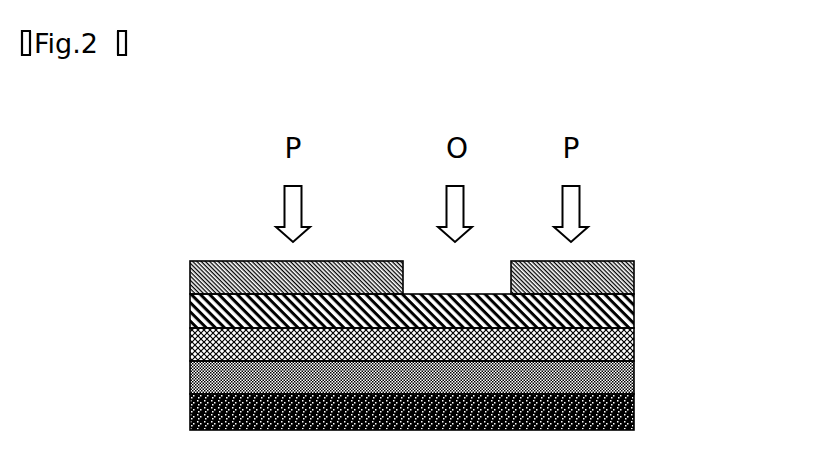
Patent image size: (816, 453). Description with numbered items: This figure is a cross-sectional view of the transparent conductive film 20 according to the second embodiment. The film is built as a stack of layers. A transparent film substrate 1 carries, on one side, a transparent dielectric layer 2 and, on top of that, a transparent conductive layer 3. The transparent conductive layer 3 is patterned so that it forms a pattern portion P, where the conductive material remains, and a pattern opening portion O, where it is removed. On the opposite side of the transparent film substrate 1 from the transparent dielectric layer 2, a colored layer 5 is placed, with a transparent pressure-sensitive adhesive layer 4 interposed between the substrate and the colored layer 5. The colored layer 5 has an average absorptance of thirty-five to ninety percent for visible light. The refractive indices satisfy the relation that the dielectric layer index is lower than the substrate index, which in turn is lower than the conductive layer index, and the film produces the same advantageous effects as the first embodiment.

The transparent film substrate 1 is at (627, 347).
The transparent dielectric layer 2 is at (627, 312).
The transparent conductive layer 3 is at (202, 272).
The transparent pressure-sensitive adhesive layer 4 is at (627, 382).
The colored layer 5 is at (627, 417).
The transparent conductive film 20 is at (657, 213).